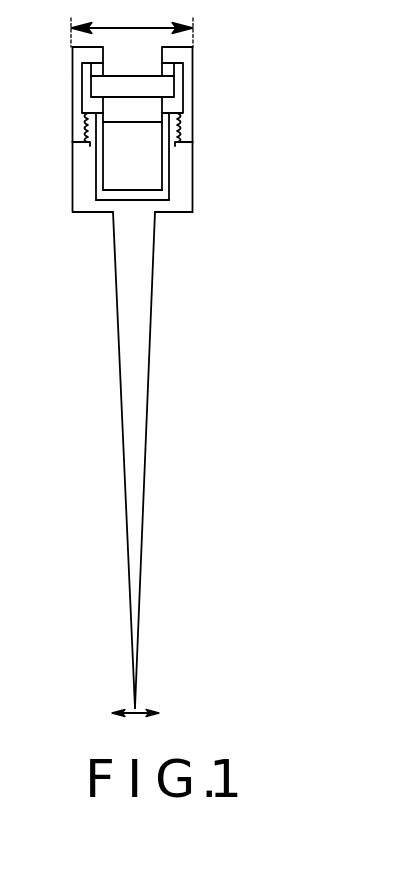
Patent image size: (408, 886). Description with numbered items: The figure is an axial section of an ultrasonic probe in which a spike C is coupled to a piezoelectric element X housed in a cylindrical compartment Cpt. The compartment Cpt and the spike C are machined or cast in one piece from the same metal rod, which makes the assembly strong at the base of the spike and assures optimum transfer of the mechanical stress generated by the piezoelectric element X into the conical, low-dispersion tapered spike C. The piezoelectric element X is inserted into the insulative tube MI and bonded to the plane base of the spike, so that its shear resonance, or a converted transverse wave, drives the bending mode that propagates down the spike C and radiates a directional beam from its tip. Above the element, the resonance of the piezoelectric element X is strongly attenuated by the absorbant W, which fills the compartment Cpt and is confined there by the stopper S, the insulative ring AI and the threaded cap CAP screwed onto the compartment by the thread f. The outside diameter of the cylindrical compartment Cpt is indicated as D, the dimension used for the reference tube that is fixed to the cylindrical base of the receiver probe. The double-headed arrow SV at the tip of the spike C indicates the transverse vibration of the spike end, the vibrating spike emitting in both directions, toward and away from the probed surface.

The inside diameter D is at (132, 24).
The threaded cap CAP is at (185, 55).
The insulative ring AI is at (173, 80).
The stopper S is at (155, 98).
The thread f is at (188, 129).
The absorbant W is at (150, 162).
The insulative tube MI is at (153, 199).
The cylindrical compartment Cpt is at (79, 198).
The piezoelectric element X is at (155, 213).
The spike C is at (135, 430).
The scanning vibration direction SV is at (141, 708).